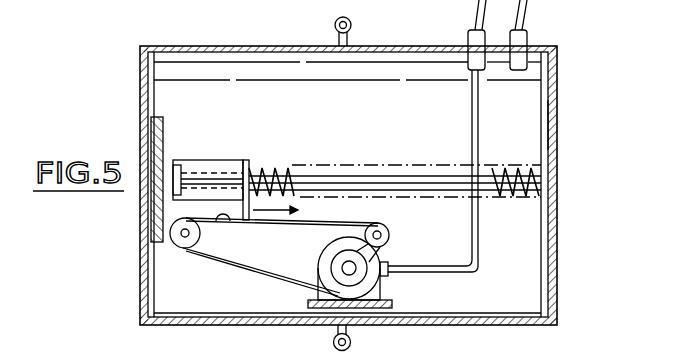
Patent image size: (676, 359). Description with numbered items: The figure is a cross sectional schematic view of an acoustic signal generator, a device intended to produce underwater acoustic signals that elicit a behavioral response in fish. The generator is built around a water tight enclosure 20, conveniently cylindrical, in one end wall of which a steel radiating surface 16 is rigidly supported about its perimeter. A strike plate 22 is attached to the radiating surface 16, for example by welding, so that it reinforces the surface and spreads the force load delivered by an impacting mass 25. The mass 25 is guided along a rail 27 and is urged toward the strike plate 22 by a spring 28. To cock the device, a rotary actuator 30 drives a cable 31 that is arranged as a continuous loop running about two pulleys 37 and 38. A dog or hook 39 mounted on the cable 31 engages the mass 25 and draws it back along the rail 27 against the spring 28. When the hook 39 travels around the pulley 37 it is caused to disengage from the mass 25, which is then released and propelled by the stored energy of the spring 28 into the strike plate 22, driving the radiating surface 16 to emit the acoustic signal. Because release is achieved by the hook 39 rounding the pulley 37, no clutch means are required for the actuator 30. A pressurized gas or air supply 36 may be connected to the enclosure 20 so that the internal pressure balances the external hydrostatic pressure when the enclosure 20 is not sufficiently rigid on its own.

The radiating surface 16 is at (147, 276).
The enclosure 20 is at (548, 126).
The strike plate 22 is at (165, 129).
The mass 25 is at (223, 160).
The rail 27 is at (314, 176).
The spring 28 is at (268, 168).
The rotary actuator 30 is at (376, 287).
The cable 31 is at (276, 277).
The pressurized gas or air supply 36 is at (528, 42).
The pulley 37 is at (389, 236).
The pulley 38 is at (184, 245).
The hook 39 is at (222, 214).